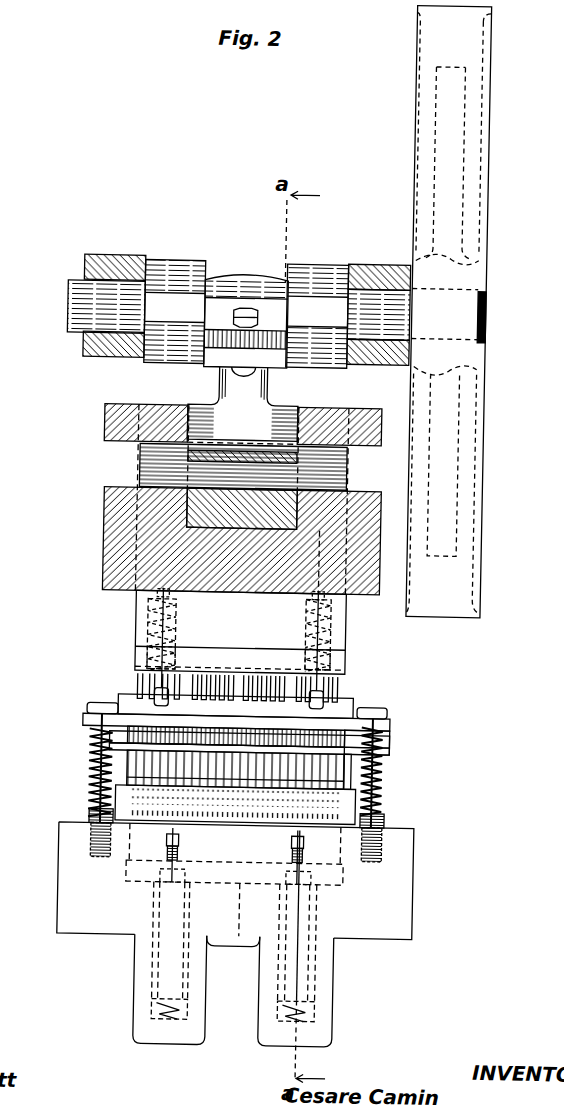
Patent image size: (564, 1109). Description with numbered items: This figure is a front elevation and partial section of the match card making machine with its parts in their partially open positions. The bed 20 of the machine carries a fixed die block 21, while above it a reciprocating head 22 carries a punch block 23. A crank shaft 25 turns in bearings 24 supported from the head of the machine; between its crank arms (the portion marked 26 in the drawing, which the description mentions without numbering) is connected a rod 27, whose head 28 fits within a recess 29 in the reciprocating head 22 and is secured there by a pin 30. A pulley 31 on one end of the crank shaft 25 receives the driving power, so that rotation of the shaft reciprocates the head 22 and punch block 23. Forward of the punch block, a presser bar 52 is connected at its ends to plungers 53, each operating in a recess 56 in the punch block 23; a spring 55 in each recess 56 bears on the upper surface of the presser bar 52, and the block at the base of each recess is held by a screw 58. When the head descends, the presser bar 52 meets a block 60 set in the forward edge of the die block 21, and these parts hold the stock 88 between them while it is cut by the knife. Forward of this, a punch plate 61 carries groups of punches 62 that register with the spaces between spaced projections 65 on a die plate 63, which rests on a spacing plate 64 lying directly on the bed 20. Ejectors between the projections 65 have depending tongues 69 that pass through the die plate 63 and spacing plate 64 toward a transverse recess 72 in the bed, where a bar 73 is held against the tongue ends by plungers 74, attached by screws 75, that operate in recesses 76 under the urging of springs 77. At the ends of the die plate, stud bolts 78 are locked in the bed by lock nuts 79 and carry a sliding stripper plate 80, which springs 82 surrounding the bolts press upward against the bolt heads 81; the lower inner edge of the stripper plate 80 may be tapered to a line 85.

The bed 20 is at (402, 906).
The die block 21 is at (355, 778).
The reciprocating head 22 is at (115, 557).
The punch block 23 is at (240, 648).
The bearings 24 is at (378, 266).
The crank shaft 25 is at (63, 308).
The collar 26 is at (200, 276).
The connecting rod 27 is at (241, 392).
The head 28 is at (200, 407).
The recess 29 is at (188, 528).
The pin 30 is at (148, 465).
The pulley 31 is at (474, 278).
The presser bar 52 is at (355, 703).
The plungers 53 is at (177, 651).
The spring 55 is at (150, 622).
The recess 56 is at (152, 634).
The screw 58 is at (322, 603).
The block 60 is at (113, 736).
The punch plate 61 is at (240, 660).
The punches 62 is at (143, 686).
The die plate 63 is at (235, 805).
The spacing plate 64 is at (243, 822).
The projections 65 is at (143, 764).
The tongue 69 is at (144, 786).
The transverse recess 72 is at (349, 873).
The bar 73 is at (135, 874).
The plungers 74 is at (156, 946).
The screws 75 is at (309, 840).
The recesses 76 is at (325, 1011).
The springs 77 is at (308, 1020).
The stud bolts 78 is at (99, 784).
The lock nuts 79 is at (389, 810).
The stripper plate 80 is at (93, 727).
The heads 81 is at (391, 707).
The springs 82 is at (386, 765).
The tapered line 85 is at (128, 751).
The stock 88 is at (393, 746).